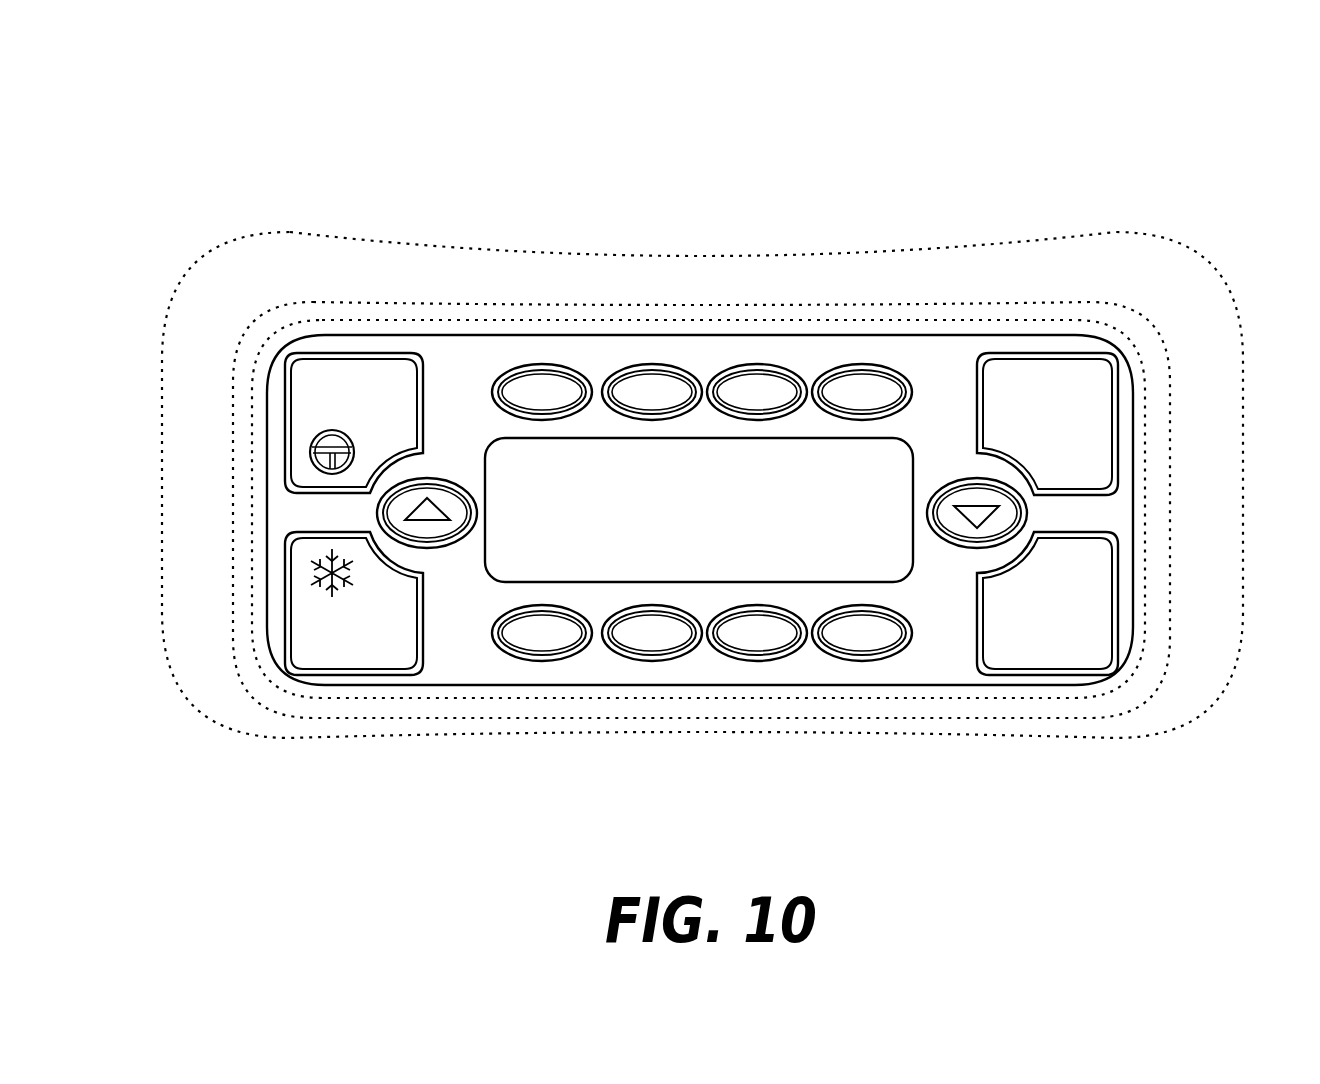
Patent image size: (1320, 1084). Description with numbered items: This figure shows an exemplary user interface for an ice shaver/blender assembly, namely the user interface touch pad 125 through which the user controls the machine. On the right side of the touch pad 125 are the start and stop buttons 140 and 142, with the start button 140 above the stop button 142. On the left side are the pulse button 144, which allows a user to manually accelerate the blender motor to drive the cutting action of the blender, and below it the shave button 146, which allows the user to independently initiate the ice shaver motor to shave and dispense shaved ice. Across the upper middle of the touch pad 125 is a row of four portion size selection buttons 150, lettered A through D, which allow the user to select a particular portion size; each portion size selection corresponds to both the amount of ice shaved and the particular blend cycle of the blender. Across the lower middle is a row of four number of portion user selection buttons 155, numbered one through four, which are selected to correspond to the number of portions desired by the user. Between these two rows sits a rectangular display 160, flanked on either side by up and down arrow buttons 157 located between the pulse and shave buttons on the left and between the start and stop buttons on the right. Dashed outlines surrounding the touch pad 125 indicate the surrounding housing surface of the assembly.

The user interface touch pad 125 is at (908, 116).
The start button 140 is at (1105, 420).
The stop button 142 is at (1105, 598).
The pulse button 144 is at (297, 418).
The shave button 146 is at (297, 596).
The portion size selection buttons 150 is at (542, 365).
The number of portion user selection buttons 155 is at (542, 662).
The up/down adjustment buttons 157 is at (398, 505).
The display 160 is at (905, 450).